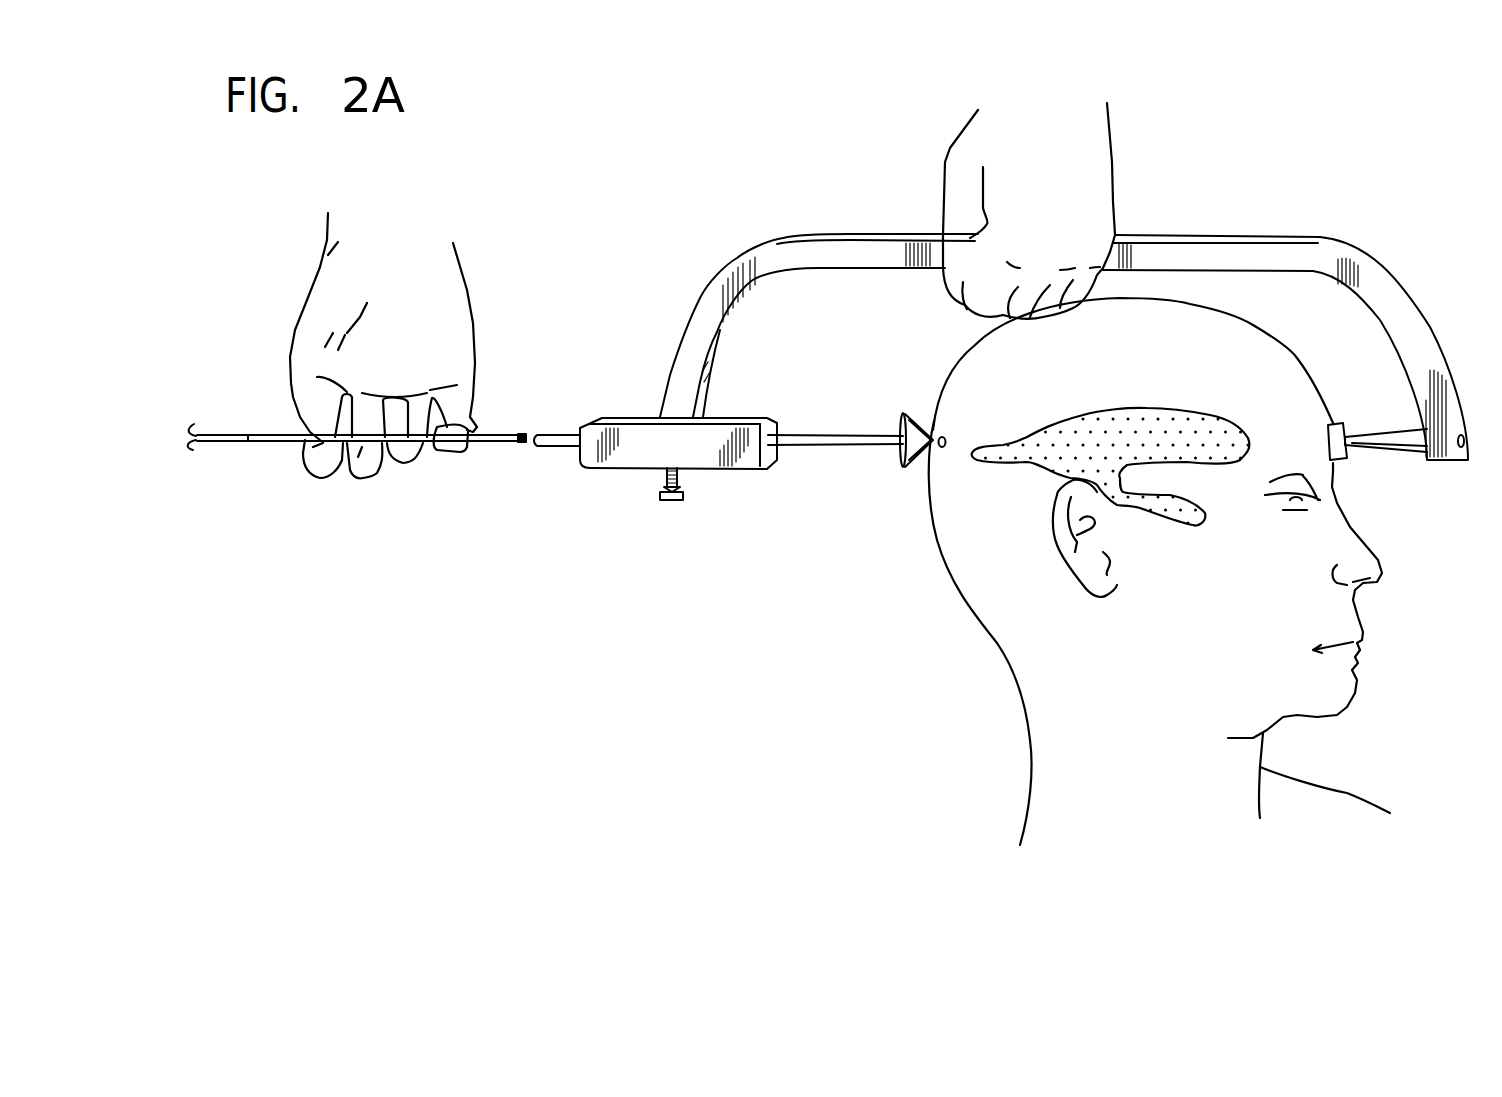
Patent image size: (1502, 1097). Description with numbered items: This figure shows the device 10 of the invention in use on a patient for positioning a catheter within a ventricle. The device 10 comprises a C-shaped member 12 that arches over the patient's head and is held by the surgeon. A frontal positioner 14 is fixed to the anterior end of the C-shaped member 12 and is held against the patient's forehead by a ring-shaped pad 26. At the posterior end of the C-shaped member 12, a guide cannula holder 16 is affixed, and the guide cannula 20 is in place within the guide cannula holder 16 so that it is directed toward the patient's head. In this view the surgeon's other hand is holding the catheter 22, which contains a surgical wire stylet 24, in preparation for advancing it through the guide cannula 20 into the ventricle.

The device 10 is at (1417, 298).
The C-shaped member 12 is at (1187, 237).
The frontal positioner 14 is at (1393, 453).
The guide cannula holder 16 is at (653, 458).
The guide cannula 20 is at (802, 437).
The catheter 22 is at (247, 442).
The surgical wire stylet 24 is at (196, 450).
The ring-shaped pad 26 is at (1340, 423).